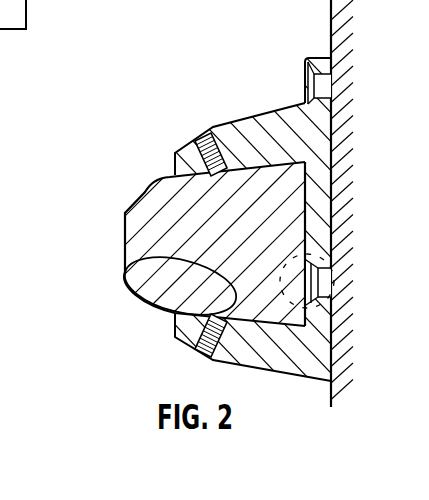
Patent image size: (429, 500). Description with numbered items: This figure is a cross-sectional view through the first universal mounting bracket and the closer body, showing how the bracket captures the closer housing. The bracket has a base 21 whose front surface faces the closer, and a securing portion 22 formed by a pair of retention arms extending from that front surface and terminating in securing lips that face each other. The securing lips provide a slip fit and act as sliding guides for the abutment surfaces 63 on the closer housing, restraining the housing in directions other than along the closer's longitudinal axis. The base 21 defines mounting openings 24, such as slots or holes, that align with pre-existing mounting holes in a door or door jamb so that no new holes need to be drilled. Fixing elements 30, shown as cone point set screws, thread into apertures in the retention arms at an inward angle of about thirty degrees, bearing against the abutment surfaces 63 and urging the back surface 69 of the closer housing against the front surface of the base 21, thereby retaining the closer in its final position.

The base 21 is at (313, 58).
The securing portion 22 is at (277, 113).
The mounting opening 24 is at (321, 86).
The fixing element 30 is at (208, 137).
The abutment surface 63 is at (135, 267).
The back surface 69 is at (306, 191).